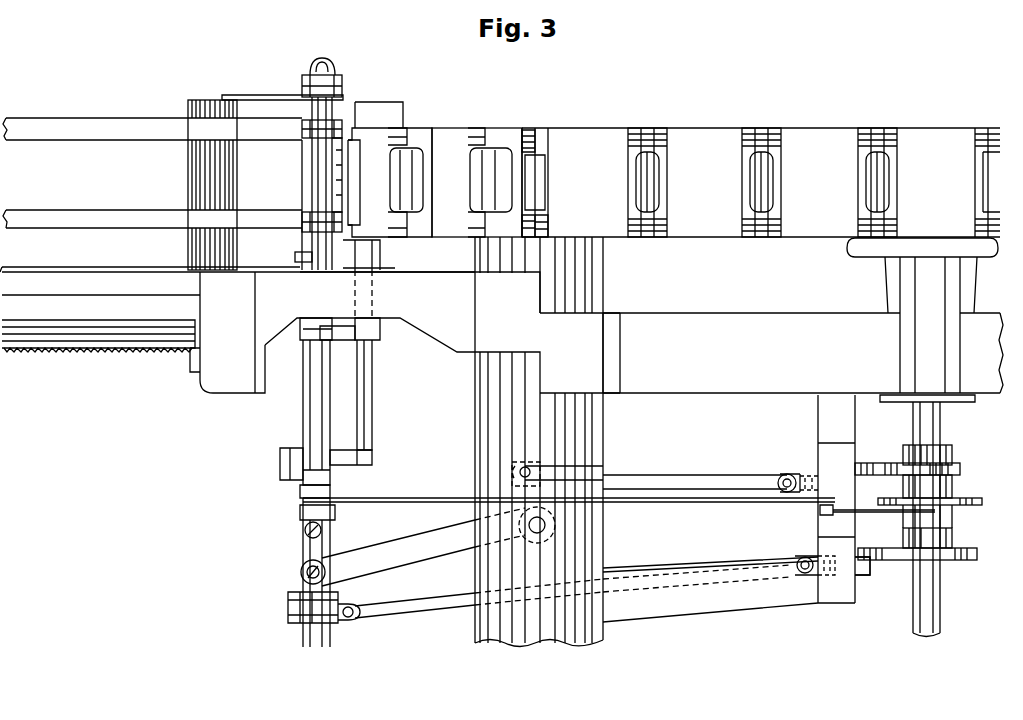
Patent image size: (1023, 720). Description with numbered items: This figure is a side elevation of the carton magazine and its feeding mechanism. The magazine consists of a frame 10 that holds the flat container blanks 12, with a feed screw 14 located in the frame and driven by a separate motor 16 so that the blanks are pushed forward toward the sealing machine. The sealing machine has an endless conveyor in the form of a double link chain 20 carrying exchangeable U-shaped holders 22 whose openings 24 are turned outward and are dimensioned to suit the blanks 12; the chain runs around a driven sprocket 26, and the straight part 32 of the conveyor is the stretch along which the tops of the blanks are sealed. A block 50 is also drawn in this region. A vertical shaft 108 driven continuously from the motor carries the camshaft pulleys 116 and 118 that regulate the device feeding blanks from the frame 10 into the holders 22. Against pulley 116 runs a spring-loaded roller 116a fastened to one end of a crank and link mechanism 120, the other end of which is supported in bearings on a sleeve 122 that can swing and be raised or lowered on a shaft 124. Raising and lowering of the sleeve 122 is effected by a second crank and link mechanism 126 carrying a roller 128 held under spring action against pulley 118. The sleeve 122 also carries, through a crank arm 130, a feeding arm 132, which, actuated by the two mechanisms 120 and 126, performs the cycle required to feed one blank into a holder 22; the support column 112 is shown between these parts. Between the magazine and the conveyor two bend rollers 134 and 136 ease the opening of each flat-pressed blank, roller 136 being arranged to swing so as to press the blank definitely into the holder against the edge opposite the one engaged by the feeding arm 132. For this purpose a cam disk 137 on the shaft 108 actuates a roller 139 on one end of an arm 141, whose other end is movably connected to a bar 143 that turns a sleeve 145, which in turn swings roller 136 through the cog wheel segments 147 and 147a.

The frame 10 is at (112, 120).
The container blanks 12 is at (190, 100).
The feed screw 14 is at (95, 352).
The motor 16 is at (212, 372).
The double link chain 20 is at (550, 208).
The holders 22 is at (490, 130).
The openings 24 is at (712, 130).
The sprocket 26 is at (550, 217).
The linearly running part 32 is at (535, 130).
The carriage block 50 is at (406, 130).
The vertical shaft 108 is at (915, 605).
The column 112 is at (606, 423).
The camshaft pulley 116 is at (950, 562).
The roller 116a is at (866, 572).
The camshaft pulley 118 is at (960, 455).
The crank and link mechanism 120 is at (820, 550).
The sleeve 122 is at (300, 524).
The shaft 124 is at (290, 615).
The crank and link mechanism 126 is at (482, 480).
The roller 128 is at (860, 462).
The crank arm 130 is at (374, 458).
The feeding arm 132 is at (366, 374).
The bend roller 134 is at (310, 116).
The bend roller 136 is at (344, 148).
The cam disk 137 is at (955, 498).
The roller 139 is at (948, 506).
The arm 141 is at (818, 506).
The bar 143 is at (362, 503).
The sleeve 145 is at (280, 470).
The cog wheel segment 147 is at (302, 340).
The cog wheel segment 147a is at (375, 338).